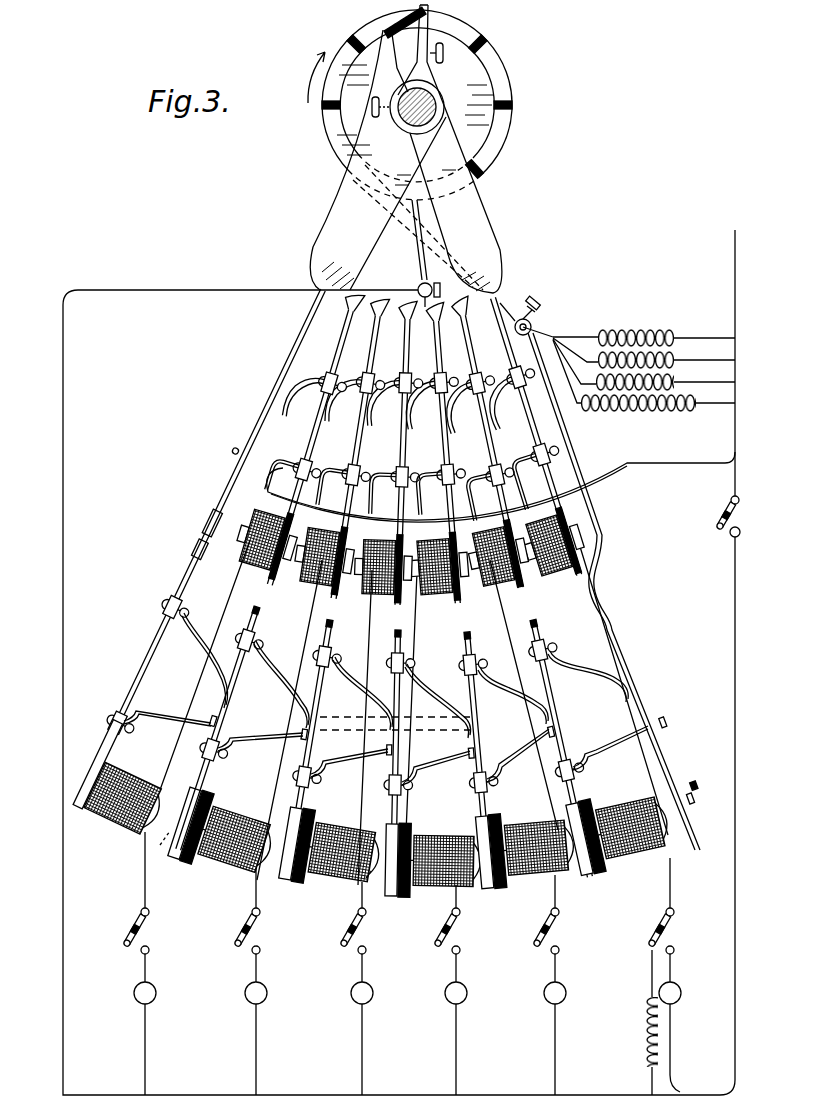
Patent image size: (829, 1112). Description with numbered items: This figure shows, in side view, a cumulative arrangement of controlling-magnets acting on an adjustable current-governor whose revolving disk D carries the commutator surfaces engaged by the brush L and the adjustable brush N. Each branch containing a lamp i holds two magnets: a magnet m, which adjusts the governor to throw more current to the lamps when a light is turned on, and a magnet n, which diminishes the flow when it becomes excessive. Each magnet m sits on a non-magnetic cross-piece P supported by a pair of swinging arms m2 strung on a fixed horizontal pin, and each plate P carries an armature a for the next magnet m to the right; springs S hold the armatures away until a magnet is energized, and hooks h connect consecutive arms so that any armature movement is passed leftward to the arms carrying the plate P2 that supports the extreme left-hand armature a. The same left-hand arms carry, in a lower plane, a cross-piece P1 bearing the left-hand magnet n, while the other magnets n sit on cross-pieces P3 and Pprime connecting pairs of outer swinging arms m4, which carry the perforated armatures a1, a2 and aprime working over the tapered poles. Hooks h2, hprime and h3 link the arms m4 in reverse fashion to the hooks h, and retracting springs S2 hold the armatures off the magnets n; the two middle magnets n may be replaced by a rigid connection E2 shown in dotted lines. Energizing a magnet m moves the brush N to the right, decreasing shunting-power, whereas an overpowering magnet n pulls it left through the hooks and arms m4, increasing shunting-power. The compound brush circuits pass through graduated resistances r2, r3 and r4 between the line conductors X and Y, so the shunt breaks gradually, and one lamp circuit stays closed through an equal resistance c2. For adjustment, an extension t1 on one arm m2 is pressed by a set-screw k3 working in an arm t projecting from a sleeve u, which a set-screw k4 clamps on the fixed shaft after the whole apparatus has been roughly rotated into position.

The arm t is at (419, 48).
The extension t1 is at (398, 49).
The adjusting set-screw k3 is at (445, 55).
The set-screw k4 is at (371, 107).
The sleeve u is at (429, 107).
The disk D is at (415, 105).
The brush L is at (378, 168).
The brush N is at (453, 216).
The line conductor X is at (737, 380).
The line conductor Y is at (374, 692).
The artificial resistance r3 is at (644, 350).
The artificial resistance r2 is at (644, 353).
The artificial resistance r4 is at (644, 376).
The spring S is at (414, 584).
The swinging arm m2 is at (409, 411).
The hook h is at (498, 481).
The magnet m is at (402, 556).
The cross-piece P is at (425, 555).
The armature a is at (388, 541).
The plate P2 is at (222, 515).
The swinging arm m4 is at (210, 538).
The spring S2 is at (393, 665).
The hook h2 is at (328, 746).
The hook hprime is at (382, 765).
The hook h3 is at (600, 754).
The rigid connection E2 is at (395, 717).
The magnet n is at (378, 824).
The cross-piece P1 is at (97, 776).
The cross-piece P3 is at (297, 850).
The cross-piece Pprime is at (543, 848).
The armature a1 is at (165, 847).
The armature a2 is at (367, 886).
The armature aprime is at (682, 803).
The electric light i is at (409, 963).
The resistance c2 is at (640, 1022).